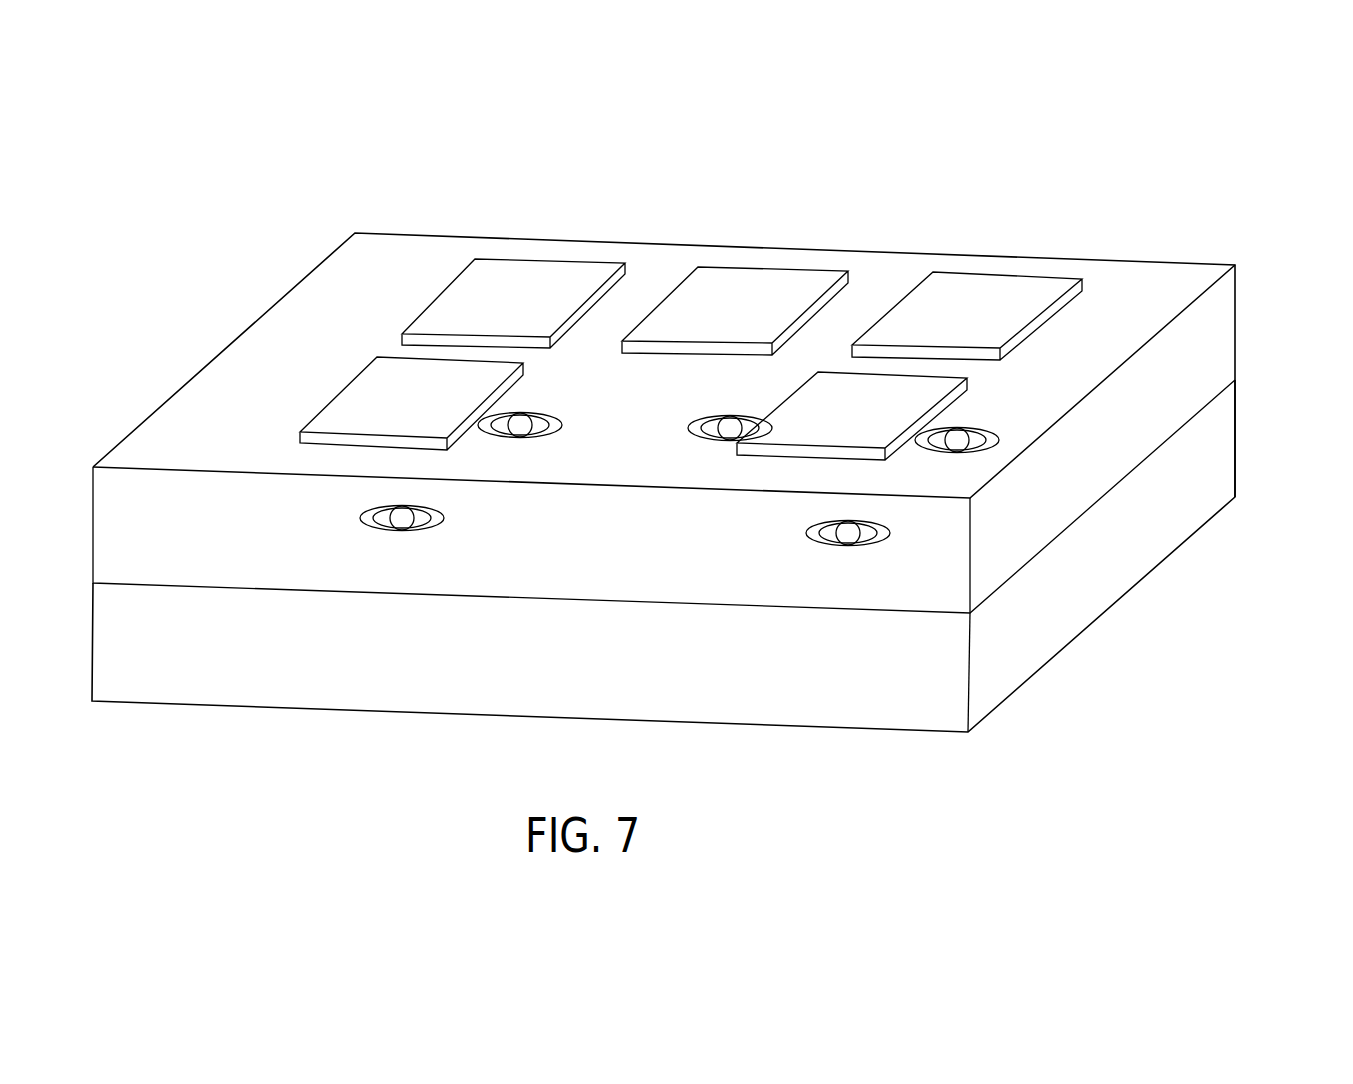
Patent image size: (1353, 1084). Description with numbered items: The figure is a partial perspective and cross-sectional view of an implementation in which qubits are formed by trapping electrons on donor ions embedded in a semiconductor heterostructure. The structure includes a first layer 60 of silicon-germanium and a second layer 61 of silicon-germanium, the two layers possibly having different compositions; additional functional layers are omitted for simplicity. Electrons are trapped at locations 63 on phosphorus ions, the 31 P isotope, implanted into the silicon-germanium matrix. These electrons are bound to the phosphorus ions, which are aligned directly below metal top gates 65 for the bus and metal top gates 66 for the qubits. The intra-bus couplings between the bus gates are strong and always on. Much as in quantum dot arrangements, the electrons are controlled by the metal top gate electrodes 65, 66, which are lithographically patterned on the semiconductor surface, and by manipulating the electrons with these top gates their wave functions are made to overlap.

The phosphorus-doped regions 31 is at (806, 533).
The first layer 60 is at (1208, 457).
The second layer 61 is at (1208, 352).
The locations 63 is at (532, 408).
The metal top gates for the bus 65 is at (542, 276).
The metal top gates for the qubits 66 is at (355, 400).